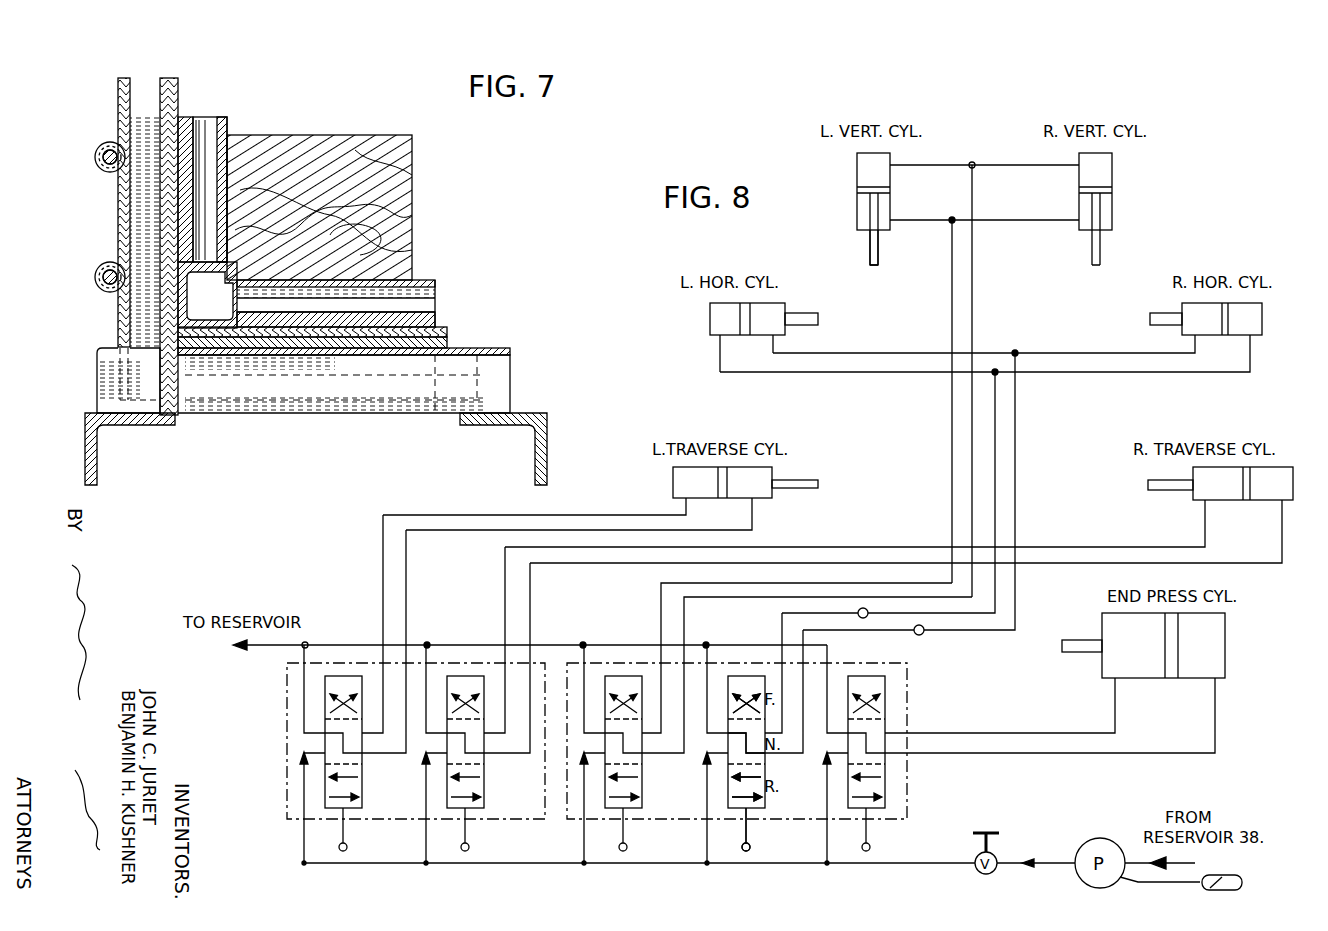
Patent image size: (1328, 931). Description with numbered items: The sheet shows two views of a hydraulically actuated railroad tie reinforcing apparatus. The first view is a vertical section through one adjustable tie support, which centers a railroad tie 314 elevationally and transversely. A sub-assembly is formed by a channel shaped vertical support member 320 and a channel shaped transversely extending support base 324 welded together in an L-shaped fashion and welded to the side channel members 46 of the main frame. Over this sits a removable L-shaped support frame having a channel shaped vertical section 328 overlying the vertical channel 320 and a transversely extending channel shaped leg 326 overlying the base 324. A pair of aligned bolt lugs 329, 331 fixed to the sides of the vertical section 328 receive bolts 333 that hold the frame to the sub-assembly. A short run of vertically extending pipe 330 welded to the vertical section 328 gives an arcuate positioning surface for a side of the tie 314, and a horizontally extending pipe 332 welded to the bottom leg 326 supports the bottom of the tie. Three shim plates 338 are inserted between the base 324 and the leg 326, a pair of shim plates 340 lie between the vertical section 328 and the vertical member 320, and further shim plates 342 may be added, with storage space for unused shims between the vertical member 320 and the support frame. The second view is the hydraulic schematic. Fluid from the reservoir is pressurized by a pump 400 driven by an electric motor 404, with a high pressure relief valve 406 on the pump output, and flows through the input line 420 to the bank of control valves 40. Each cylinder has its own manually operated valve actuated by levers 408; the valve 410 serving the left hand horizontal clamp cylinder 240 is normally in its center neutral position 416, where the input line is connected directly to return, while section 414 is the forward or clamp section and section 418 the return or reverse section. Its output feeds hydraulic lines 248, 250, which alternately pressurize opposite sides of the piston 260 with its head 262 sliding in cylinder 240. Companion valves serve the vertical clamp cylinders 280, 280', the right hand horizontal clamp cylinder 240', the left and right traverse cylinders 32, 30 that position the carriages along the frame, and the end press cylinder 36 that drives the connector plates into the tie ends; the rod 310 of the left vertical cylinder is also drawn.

In FIG. 7, the railroad tie 314 is at (412, 246).
In FIG. 7, the shim plates 342 is at (122, 84).
In FIG. 7, the channel shaped vertical support member 320 is at (157, 132).
In FIG. 7, the shim plates 340 is at (180, 95).
In FIG. 7, the channel shaped vertical support frame section 328 is at (186, 125).
In FIG. 7, the vertically extending pipe 330 is at (222, 134).
In FIG. 7, the horizontally extending pipe 332 is at (430, 284).
In FIG. 7, the transversely extending channel shaped leg 326 is at (430, 322).
In FIG. 7, the shim plates 338 is at (450, 336).
In FIG. 7, the channel shaped transversely extending support base 324 is at (512, 382).
In FIG. 7, the side channel members 46 is at (100, 466).
In FIG. 7, the bolts 333 is at (100, 152).
In FIG. 7, the bolt lug 331 is at (110, 172).
In FIG. 7, the bolt lug 329 is at (105, 265).
In FIG. 8, the vertical surface hydraulic clamp cylinder 280 is at (849, 209).
In FIG. 8, the vertical hydraulic clamp cylinder 280' is at (1133, 209).
In FIG. 8, the piston rod 310 is at (878, 254).
In FIG. 8, the horizontal surface hydraulic clamp cylinder 240 is at (722, 319).
In FIG. 8, the horizontal hydraulic clamp cylinder 240' is at (1234, 319).
In FIG. 8, the piston 260 is at (790, 313).
In FIG. 8, the piston head 262 is at (725, 331).
In FIG. 8, the flexible hydraulic line 250 is at (835, 352).
In FIG. 8, the flexible hydraulic line 248 is at (772, 373).
In FIG. 8, the left hand traverse hydraulic cylinder 32 is at (668, 470).
In FIG. 8, the right hand traverse hydraulic cylinder 30 is at (1239, 504).
In FIG. 8, the end press hydraulic cylinder 36 is at (1231, 657).
In FIG. 8, the control section 40 is at (282, 754).
In FIG. 8, the control valve 410 is at (743, 672).
In FIG. 8, the forward or clamp section 414 is at (728, 697).
In FIG. 8, the center or neutral position 416 is at (728, 743).
In FIG. 8, the return or reverse section 418 is at (728, 787).
In FIG. 8, the levers 408 is at (750, 848).
In FIG. 8, the high pressure relief valve 406 is at (996, 832).
In FIG. 8, the pump 400 is at (1078, 853).
In FIG. 8, the electric motor 404 is at (1235, 885).
In FIG. 8, the input line 420 is at (900, 862).